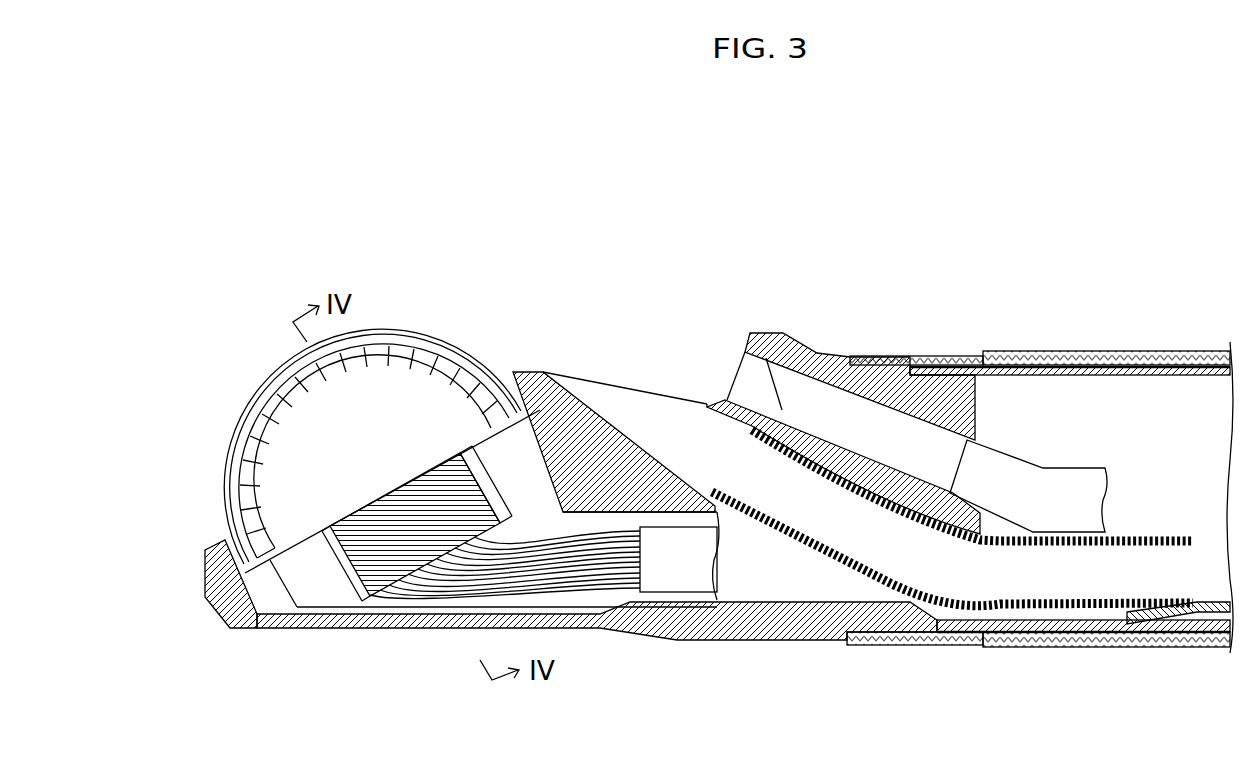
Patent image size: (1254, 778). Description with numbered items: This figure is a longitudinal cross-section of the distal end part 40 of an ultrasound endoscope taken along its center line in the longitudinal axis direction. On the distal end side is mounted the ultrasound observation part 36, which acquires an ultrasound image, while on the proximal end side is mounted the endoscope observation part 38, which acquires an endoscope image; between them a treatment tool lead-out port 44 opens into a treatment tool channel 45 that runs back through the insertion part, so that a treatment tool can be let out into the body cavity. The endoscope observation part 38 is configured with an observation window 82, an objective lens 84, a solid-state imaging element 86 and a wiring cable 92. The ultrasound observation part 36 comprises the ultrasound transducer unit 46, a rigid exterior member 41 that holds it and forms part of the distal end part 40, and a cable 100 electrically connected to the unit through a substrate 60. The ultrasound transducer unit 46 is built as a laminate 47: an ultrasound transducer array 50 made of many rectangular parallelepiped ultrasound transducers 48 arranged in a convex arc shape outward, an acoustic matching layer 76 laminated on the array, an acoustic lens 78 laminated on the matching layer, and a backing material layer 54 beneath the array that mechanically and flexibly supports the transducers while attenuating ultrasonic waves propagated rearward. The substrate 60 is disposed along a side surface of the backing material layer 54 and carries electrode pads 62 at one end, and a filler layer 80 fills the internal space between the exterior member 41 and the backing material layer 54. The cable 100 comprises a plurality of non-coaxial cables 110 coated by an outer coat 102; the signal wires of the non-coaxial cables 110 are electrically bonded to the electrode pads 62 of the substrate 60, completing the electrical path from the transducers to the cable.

The ultrasound observation part 36 is at (349, 367).
The endoscope observation part 38 is at (950, 435).
The distal end part 40 is at (614, 338).
The exterior member 41 is at (215, 612).
The treatment tool lead-out port 44 is at (624, 395).
The treatment tool channel 45 is at (1057, 587).
The ultrasound transducer unit 46 is at (360, 416).
The laminate 47 is at (349, 406).
The ultrasound transducer 48 is at (270, 405).
The ultrasound transducer array 50 is at (349, 424).
The backing material layer 54 is at (382, 447).
The substrate 60 is at (478, 447).
The electrode pads 62 is at (430, 451).
The acoustic matching layer 76 is at (430, 340).
The acoustic lens 78 is at (360, 416).
The filler layer 80 is at (288, 553).
The observation window 82 is at (738, 365).
The objective lens 84 is at (748, 377).
The solid-state imaging element 86 is at (775, 372).
The wiring cable 92 is at (1072, 472).
The cable 100 is at (697, 614).
The outer coat 102 is at (660, 585).
The non-coaxial cables 110 is at (468, 577).